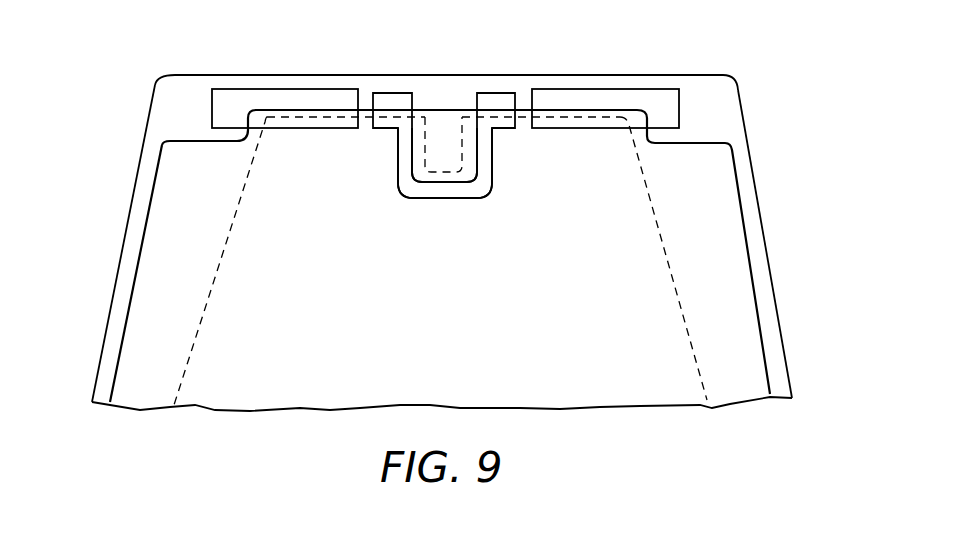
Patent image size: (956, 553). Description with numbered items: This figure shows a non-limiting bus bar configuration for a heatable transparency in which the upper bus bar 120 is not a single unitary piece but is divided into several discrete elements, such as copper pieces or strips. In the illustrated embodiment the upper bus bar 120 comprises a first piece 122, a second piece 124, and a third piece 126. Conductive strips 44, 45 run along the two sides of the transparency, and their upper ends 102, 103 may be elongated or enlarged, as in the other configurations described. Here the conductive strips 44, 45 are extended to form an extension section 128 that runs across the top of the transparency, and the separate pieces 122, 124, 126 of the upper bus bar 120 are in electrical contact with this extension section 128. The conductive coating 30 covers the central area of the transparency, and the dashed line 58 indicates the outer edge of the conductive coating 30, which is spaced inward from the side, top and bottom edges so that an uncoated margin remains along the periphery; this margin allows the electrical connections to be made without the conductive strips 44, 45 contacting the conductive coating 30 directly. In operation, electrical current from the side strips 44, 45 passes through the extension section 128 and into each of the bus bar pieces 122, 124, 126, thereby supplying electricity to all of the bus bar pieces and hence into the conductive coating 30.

The conductive coating 30 is at (670, 352).
The conductive strip 44 is at (127, 223).
The conductive strip 45 is at (765, 235).
The line indicating outer edge of conductive coating 58 is at (203, 319).
The upper end of conductive strip 102 is at (176, 97).
The upper end of conductive strip 103 is at (722, 103).
The upper bus bar 120 is at (377, 163).
The first piece 122 is at (288, 88).
The second piece 124 is at (612, 90).
The third piece 126 is at (452, 216).
The extension section 128 is at (449, 88).